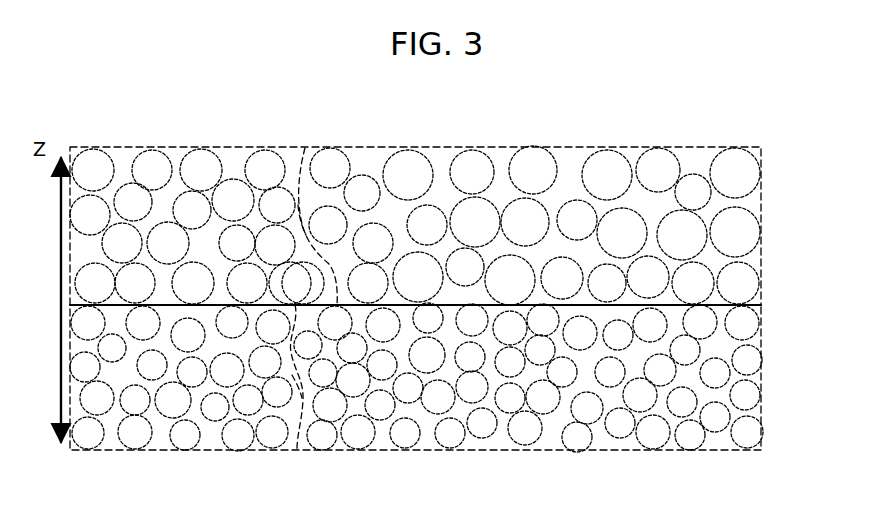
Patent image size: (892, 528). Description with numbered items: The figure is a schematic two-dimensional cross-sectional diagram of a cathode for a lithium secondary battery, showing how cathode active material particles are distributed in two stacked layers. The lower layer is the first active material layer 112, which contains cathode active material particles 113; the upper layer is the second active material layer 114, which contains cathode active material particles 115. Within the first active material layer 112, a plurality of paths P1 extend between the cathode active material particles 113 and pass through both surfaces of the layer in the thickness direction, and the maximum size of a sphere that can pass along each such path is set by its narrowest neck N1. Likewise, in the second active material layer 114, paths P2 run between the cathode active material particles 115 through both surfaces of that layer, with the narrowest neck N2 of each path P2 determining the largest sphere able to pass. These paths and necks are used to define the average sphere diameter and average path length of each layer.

The first active material layer 112 is at (762, 387).
The cathode active material particles 113 is at (742, 325).
The second active material layer 114 is at (762, 212).
The cathode active material particles 115 is at (742, 172).
The path P1 is at (306, 441).
The path P2 is at (306, 149).
The narrowest neck N1 is at (289, 390).
The narrowest neck N2 is at (320, 230).